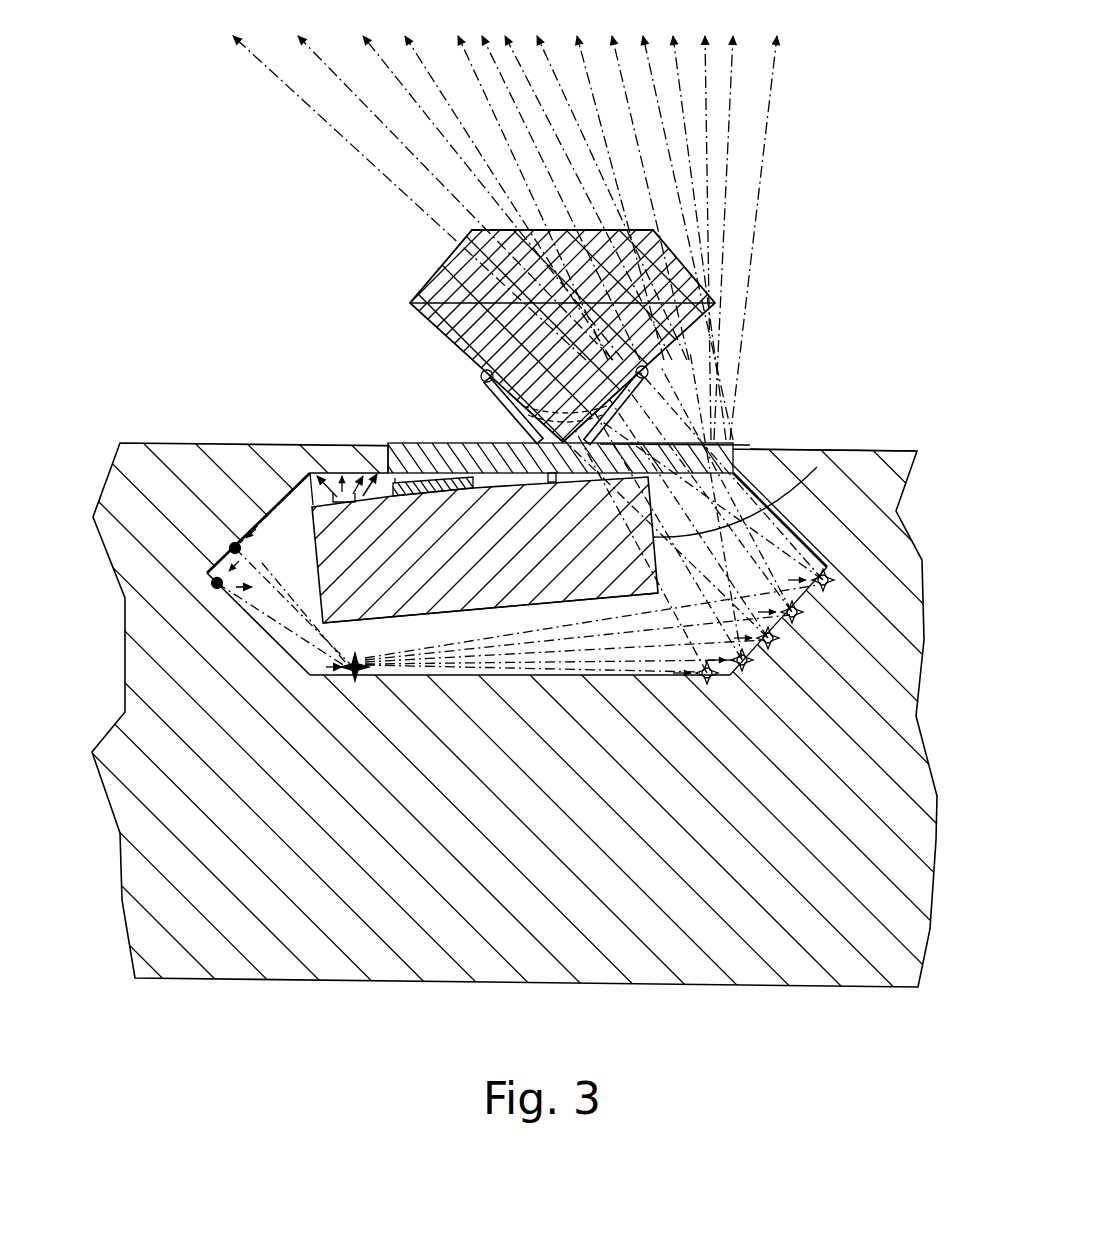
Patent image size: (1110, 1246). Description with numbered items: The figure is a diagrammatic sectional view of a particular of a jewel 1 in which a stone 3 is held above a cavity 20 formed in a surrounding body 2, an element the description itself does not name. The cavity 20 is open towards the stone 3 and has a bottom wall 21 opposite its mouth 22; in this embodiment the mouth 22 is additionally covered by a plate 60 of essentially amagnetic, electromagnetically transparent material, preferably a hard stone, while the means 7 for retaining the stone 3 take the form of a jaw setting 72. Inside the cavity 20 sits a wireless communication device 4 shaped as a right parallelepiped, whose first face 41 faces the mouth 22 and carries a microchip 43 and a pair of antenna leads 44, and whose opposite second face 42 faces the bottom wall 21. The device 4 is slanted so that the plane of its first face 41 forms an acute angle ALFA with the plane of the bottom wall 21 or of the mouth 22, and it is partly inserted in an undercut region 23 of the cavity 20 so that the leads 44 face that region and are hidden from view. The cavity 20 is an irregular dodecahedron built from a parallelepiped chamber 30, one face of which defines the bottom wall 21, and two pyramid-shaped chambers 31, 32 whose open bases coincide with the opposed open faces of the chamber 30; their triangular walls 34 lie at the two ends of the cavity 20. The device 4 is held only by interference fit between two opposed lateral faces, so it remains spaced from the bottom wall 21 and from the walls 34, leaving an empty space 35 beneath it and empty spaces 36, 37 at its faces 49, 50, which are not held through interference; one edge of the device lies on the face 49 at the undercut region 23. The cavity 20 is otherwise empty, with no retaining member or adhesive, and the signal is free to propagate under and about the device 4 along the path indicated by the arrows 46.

The jewel 1 is at (162, 196).
The body (setting) with cavity 2 is at (817, 470).
The stone 3 is at (684, 245).
The communication device 4 is at (386, 470).
The means for retaining stone 7 is at (600, 425).
The jaw setting 72 is at (600, 425).
The cavity 20 is at (297, 660).
The bottom wall 21 is at (437, 673).
The mouth 22 is at (379, 473).
The undercut region 23 is at (311, 476).
The parallelepiped chamber 30 is at (466, 642).
The pyramid-shaped chamber 31 is at (210, 584).
The pyramid-shaped chamber 32 is at (766, 544).
The triangular walls 34 is at (268, 633).
The empty space 35 is at (363, 661).
The empty space 36 is at (280, 548).
The empty space 37 is at (668, 596).
The first face 41 is at (468, 443).
The second face 42 is at (495, 615).
The microchip 43 is at (392, 542).
The leads 44 is at (372, 478).
The arrows 46 is at (748, 640).
The face 49 is at (322, 622).
The face 50 is at (775, 515).
The plate 60 is at (645, 445).